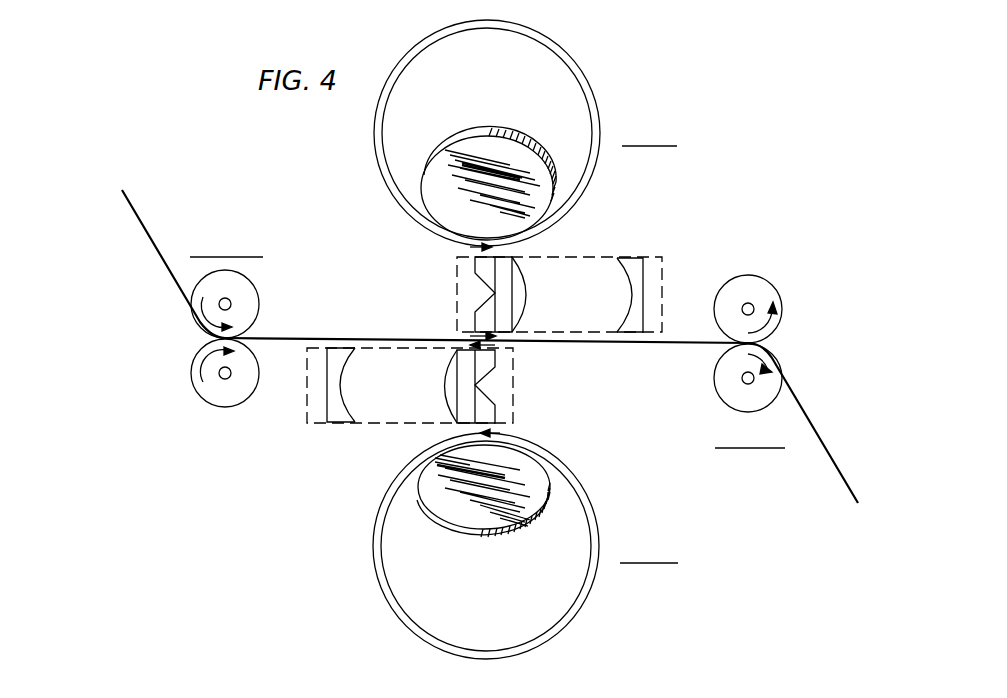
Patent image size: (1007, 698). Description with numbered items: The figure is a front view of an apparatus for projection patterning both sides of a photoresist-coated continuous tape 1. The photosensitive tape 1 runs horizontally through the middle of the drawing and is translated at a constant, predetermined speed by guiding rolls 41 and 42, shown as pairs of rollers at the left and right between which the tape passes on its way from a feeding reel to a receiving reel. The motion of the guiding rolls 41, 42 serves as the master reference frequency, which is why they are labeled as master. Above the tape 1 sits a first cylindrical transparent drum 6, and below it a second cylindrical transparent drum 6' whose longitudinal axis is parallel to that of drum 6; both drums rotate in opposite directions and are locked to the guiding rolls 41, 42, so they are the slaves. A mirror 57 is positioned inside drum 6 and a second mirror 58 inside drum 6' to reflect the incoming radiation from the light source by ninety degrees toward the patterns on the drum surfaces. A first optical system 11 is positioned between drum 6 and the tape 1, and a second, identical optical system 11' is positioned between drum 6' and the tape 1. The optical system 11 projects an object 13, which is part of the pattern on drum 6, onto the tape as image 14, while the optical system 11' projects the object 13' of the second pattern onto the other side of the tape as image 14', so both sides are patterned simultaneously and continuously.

The photosensitive tape 1 is at (135, 210).
The guiding roll 41 is at (237, 444).
The guiding roll 42 is at (757, 262).
The first cylindrical transparent drum 6 is at (525, 133).
The second cylindrical transparent drum 6' is at (525, 546).
The mirror 57 is at (543, 200).
The second mirror 58 is at (541, 502).
The first optical system 11 is at (559, 279).
The second optical system 11' is at (410, 400).
The object 13 is at (408, 246).
The object 13' is at (558, 426).
The image 14 is at (410, 323).
The image 14' is at (549, 359).